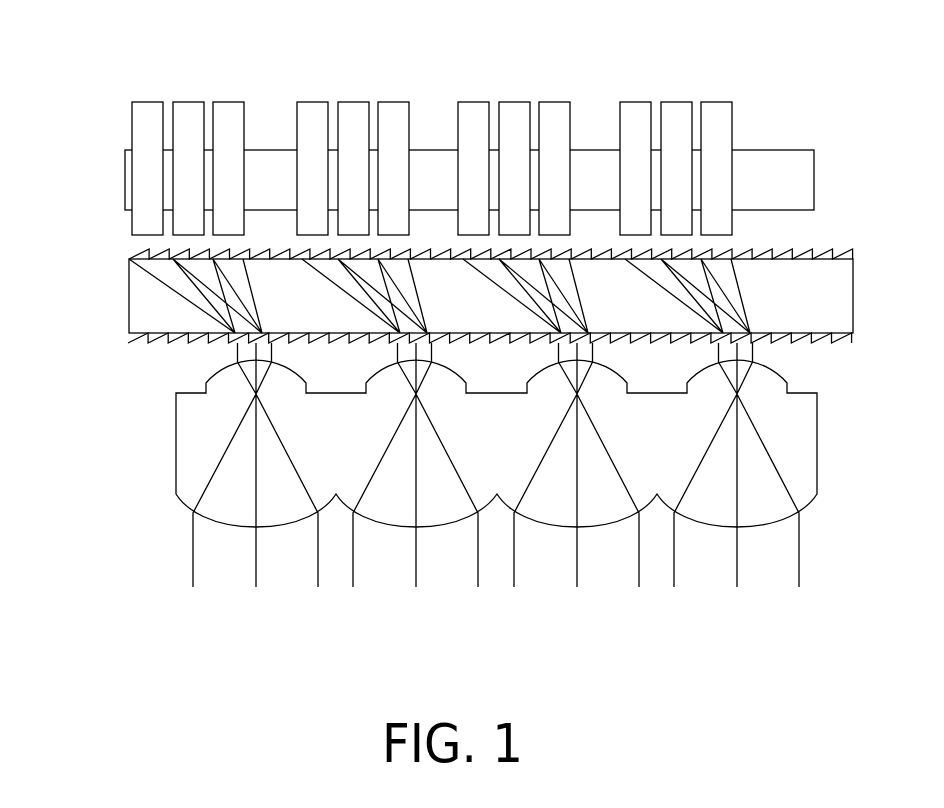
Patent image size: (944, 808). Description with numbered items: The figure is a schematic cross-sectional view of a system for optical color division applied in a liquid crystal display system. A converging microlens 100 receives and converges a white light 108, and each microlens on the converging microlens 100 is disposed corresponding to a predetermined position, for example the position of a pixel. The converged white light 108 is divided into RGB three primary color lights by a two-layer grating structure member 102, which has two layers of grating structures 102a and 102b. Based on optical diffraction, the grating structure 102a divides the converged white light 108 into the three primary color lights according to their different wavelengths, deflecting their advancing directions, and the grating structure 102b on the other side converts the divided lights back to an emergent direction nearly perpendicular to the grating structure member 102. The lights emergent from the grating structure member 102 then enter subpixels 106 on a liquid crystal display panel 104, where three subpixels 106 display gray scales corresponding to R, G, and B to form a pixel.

The converging microlens 100 is at (190, 455).
The grating structure member 102 is at (150, 301).
The grating structure 102a is at (128, 337).
The grating structure 102b is at (136, 258).
The liquid crystal display panel 104 is at (777, 168).
The subpixels 106 is at (775, 55).
The white light 108 is at (170, 548).